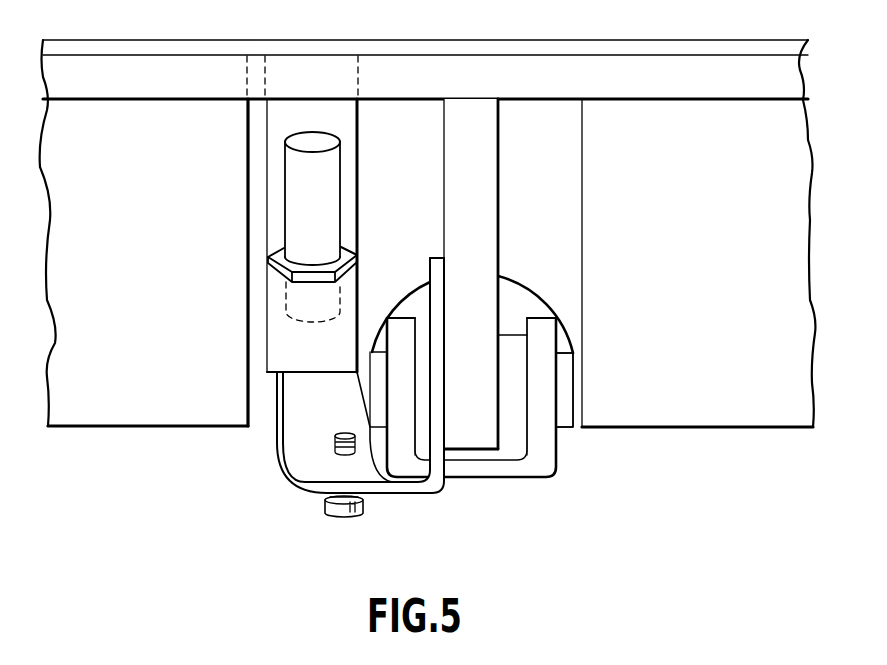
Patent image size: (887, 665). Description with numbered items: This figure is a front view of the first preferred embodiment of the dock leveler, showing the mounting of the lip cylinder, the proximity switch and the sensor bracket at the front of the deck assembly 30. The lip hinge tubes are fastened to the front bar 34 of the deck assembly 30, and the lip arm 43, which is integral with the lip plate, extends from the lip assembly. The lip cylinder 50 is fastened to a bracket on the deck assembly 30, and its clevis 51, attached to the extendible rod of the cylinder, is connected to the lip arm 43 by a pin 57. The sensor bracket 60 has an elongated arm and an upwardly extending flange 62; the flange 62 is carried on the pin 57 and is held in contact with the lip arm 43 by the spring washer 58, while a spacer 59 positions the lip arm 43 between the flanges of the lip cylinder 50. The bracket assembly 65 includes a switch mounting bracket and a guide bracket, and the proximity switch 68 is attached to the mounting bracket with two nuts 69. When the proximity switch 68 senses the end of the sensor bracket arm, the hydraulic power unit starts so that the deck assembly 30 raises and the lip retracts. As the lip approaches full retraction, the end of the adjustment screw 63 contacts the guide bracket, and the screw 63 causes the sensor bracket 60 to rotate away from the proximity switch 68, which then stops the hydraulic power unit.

The deck assembly 30 is at (455, 40).
The front bar 34 is at (740, 428).
The lip arm 43 is at (500, 242).
The lip cylinder 50 is at (527, 472).
The clevis 51 is at (486, 405).
The pin 57 is at (568, 428).
The spring washer 58 is at (418, 330).
The spacer 59 is at (527, 334).
The sensor bracket 60 is at (407, 490).
The upwardly extending flange 62 is at (438, 257).
The adjustment screw 63 is at (337, 517).
The bracket assembly 65 is at (270, 350).
The proximity switch 68 is at (285, 200).
The nuts 69 is at (277, 266).